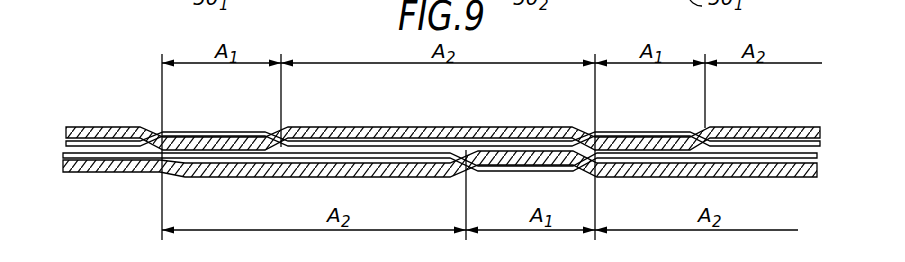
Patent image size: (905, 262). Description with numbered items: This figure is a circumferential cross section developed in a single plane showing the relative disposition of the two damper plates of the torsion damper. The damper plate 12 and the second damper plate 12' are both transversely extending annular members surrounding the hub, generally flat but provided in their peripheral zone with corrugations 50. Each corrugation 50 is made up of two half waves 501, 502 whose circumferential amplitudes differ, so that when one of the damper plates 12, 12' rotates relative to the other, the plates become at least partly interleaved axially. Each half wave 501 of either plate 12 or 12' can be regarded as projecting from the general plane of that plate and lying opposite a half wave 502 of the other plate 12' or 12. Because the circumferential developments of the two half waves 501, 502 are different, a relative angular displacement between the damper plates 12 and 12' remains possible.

The corrugation 50 is at (137, 117).
The half wave 501 is at (637, 145).
The half wave 502 is at (740, 128).
The damper plate 12 is at (820, 98).
The second damper plate 12' is at (795, 193).